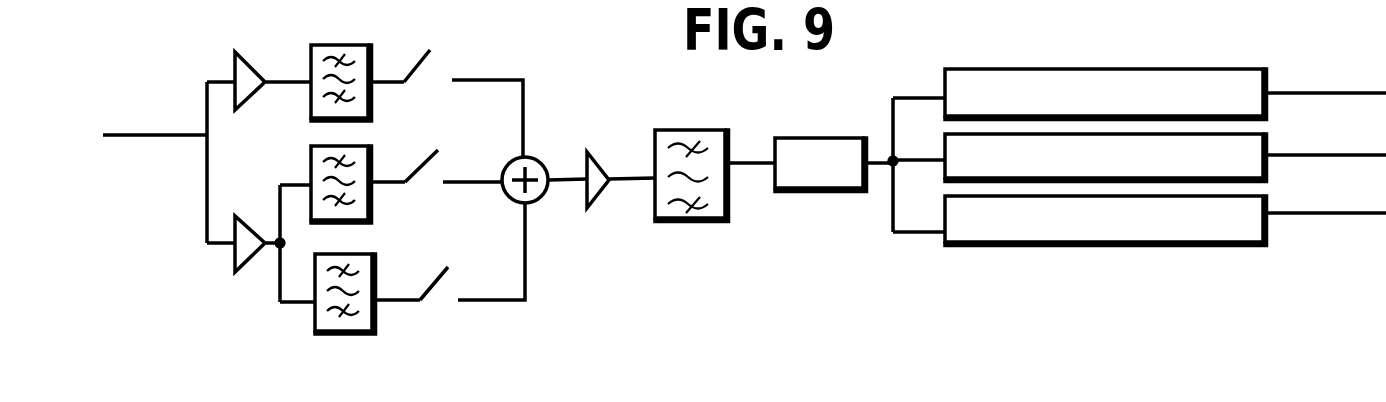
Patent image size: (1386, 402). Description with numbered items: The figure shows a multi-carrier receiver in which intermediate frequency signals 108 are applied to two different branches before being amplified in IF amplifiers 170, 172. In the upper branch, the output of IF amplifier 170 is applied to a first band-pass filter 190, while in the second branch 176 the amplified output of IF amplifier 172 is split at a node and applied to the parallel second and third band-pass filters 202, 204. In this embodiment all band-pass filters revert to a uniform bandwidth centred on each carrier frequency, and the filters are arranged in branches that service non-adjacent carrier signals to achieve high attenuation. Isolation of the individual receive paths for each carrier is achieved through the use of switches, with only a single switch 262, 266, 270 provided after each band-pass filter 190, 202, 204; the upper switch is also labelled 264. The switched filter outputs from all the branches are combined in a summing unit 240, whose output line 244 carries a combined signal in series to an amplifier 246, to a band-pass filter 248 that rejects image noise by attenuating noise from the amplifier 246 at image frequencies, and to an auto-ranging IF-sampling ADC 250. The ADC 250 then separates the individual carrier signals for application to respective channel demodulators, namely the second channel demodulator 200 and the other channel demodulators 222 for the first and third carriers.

The intermediate frequency signals 108 is at (128, 135).
The IF amplifier 170 is at (238, 54).
The IF amplifier 172 is at (237, 249).
The second branch 176 is at (272, 248).
The first band-pass filter 190 is at (353, 45).
The second band-pass filter 202 is at (376, 220).
The third band-pass filter 204 is at (378, 334).
The switch 264 is at (458, 8).
The switch 262 is at (427, 62).
The switch 266 is at (432, 163).
The switch 270 is at (432, 295).
The summing unit 240 is at (537, 158).
The summer output line 244 is at (565, 182).
The amplifier 246 is at (604, 156).
The band-pass filter 248 is at (690, 130).
The auto-ranging IF-sampling ADC 250 is at (848, 138).
The channel demodulator 222 is at (946, 80).
The second channel demodulator 200 is at (1247, 160).